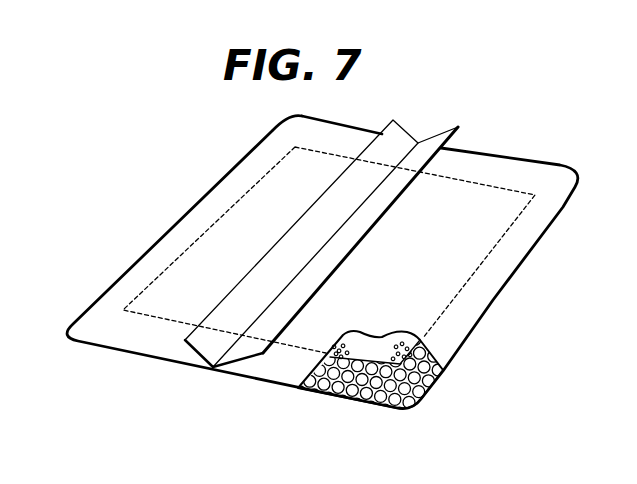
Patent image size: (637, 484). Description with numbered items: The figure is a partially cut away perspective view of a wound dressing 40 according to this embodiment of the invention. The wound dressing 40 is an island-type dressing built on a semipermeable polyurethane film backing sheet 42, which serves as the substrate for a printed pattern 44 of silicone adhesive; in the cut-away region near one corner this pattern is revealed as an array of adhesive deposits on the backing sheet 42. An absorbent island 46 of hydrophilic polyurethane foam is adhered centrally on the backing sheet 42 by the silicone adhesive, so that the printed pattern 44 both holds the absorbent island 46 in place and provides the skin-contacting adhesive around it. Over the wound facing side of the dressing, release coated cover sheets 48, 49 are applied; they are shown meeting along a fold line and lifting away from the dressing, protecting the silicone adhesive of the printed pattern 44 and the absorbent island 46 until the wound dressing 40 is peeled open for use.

The wound dressing 40 is at (551, 152).
The backing sheet 42 is at (443, 378).
The printed pattern of silicone adhesive 44 is at (418, 397).
The absorbent island 46 is at (382, 348).
The release coated cover sheet 48 is at (402, 137).
The release coated cover sheet 49 is at (440, 138).